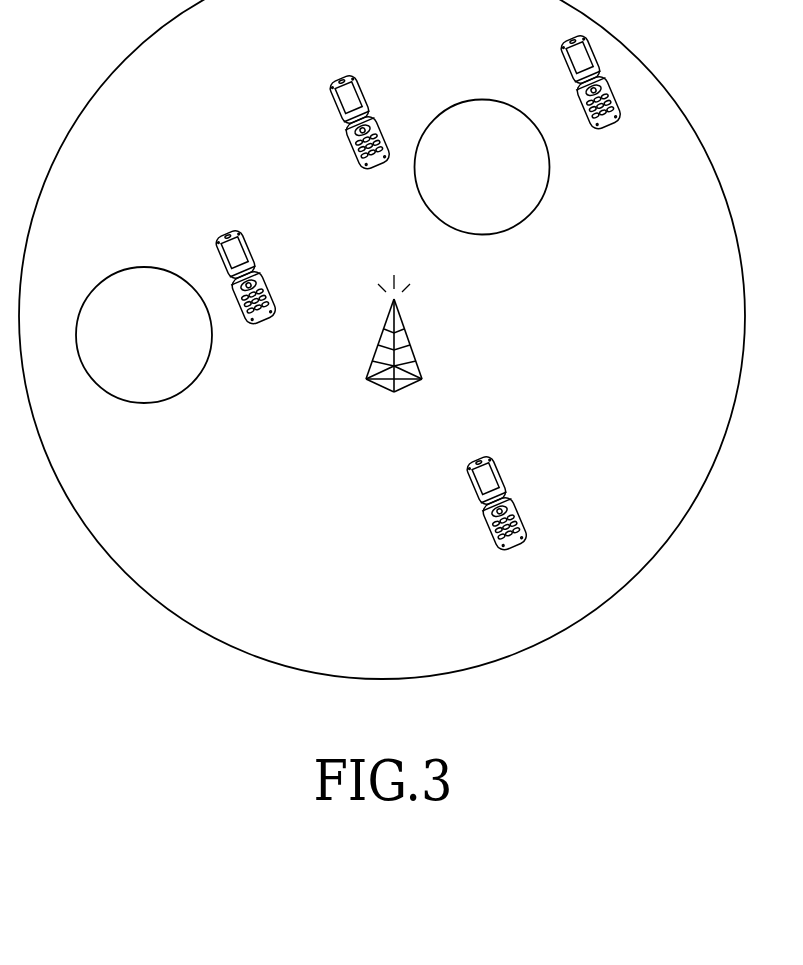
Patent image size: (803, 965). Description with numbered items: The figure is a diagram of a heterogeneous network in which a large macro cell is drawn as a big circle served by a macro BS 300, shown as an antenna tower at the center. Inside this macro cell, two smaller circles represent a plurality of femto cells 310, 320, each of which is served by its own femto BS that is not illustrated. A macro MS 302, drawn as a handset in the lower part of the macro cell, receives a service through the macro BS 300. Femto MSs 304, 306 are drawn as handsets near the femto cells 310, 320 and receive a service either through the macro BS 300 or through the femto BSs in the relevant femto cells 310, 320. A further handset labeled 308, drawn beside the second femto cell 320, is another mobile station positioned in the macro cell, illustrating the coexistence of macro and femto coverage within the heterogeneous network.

The macro BS 300 is at (408, 338).
The macro MS 302 is at (530, 518).
The femto MS 304 is at (272, 296).
The femto MS 306 is at (360, 76).
The mobile station MS 4 308 is at (558, 72).
The femto cell 310 is at (136, 268).
The femto cell 320 is at (514, 227).